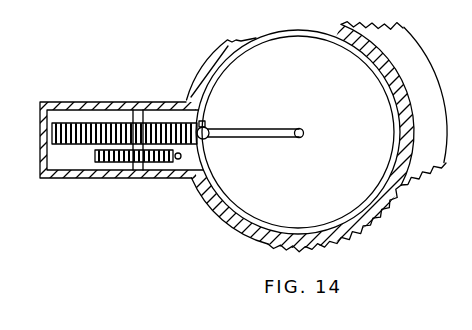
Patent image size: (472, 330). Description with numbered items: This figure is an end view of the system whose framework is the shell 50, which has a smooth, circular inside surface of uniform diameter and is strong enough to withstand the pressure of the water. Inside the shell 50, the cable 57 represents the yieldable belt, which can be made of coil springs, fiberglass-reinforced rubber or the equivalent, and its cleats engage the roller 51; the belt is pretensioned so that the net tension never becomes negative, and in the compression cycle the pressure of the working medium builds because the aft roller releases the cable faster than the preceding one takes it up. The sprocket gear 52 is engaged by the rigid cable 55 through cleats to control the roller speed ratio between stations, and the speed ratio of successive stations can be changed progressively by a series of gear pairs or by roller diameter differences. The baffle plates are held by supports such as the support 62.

The shell 50 is at (372, 228).
The roller 51 is at (72, 145).
The sprocket gear 52 is at (133, 162).
The rigid cable 55 is at (181, 157).
The cable 57 is at (206, 128).
The support 62 is at (284, 128).